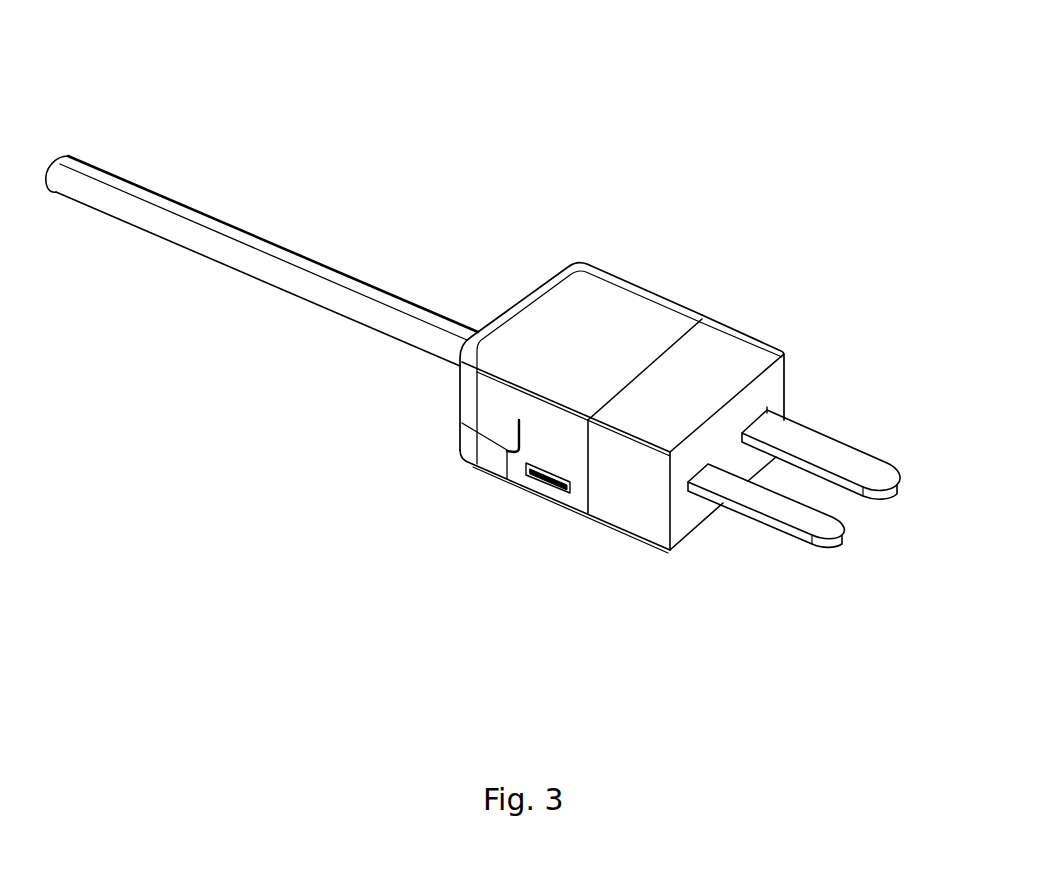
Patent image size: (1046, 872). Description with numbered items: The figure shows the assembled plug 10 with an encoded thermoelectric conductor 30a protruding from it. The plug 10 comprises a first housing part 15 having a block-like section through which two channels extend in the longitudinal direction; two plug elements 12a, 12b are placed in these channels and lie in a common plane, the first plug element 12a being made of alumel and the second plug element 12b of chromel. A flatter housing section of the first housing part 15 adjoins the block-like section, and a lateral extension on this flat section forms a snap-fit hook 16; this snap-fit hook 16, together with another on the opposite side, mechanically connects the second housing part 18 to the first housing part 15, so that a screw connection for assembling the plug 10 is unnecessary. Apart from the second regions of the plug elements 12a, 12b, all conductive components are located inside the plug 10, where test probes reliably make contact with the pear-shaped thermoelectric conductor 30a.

The plug 10 is at (728, 175).
The first plug element 12a is at (815, 448).
The second plug element 12b is at (785, 512).
The first housing part 15 is at (708, 365).
The snap-fit hook 16 is at (547, 475).
The second housing part 18 is at (557, 322).
The encoded thermoelectric conductor 30a is at (280, 275).